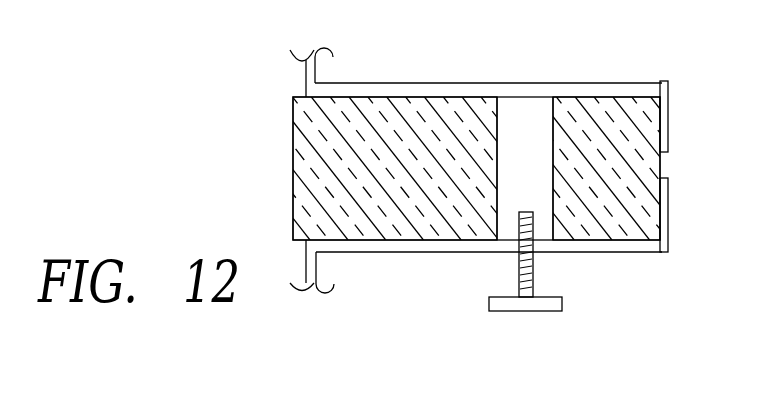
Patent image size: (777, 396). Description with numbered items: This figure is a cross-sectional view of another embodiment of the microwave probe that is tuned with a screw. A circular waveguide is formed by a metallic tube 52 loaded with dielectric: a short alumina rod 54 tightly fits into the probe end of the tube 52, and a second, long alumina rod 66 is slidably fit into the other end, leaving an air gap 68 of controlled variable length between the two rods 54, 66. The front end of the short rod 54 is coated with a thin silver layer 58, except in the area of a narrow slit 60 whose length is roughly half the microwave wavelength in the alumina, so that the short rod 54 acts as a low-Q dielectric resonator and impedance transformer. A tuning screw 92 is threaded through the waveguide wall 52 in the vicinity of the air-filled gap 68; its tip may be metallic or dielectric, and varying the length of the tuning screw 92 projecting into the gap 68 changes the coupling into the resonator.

The metallic tube 52 is at (368, 92).
The short alumina rod 54 is at (603, 100).
The silver layer 58 is at (668, 132).
The slit 60 is at (668, 170).
The long alumina rod 66 is at (446, 103).
The air gap 68 is at (531, 117).
The tuning screw 92 is at (533, 272).